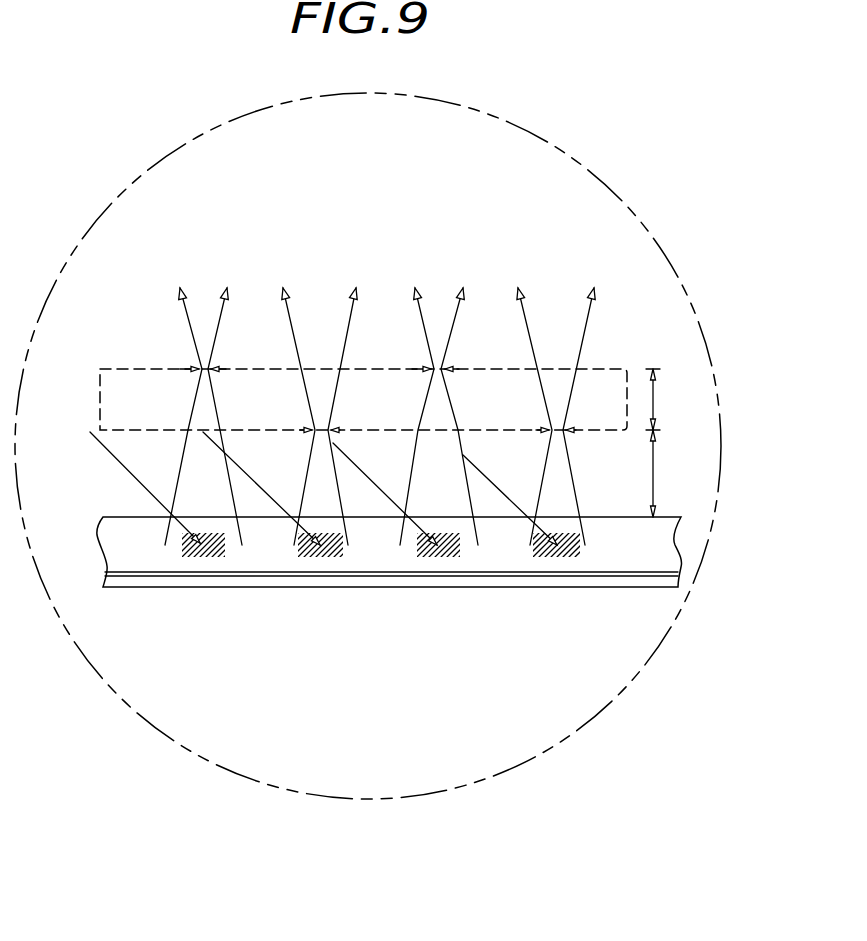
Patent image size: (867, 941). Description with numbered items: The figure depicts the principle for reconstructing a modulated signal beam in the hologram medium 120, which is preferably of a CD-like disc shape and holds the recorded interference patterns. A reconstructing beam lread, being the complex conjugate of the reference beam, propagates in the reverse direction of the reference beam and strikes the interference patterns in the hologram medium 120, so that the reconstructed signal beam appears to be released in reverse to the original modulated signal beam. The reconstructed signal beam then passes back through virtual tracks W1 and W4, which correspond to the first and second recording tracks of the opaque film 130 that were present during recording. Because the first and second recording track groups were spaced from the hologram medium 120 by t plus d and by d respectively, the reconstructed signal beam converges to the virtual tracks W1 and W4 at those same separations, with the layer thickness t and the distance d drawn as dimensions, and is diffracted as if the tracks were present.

The hologram medium 120 is at (662, 524).
The opaque film 130 is at (613, 369).
The virtual track W1 is at (330, 361).
The virtual track W4 is at (450, 422).
The thickness distance t is at (656, 399).
The distance d is at (660, 473).
The reconstructing beam lread is at (293, 477).